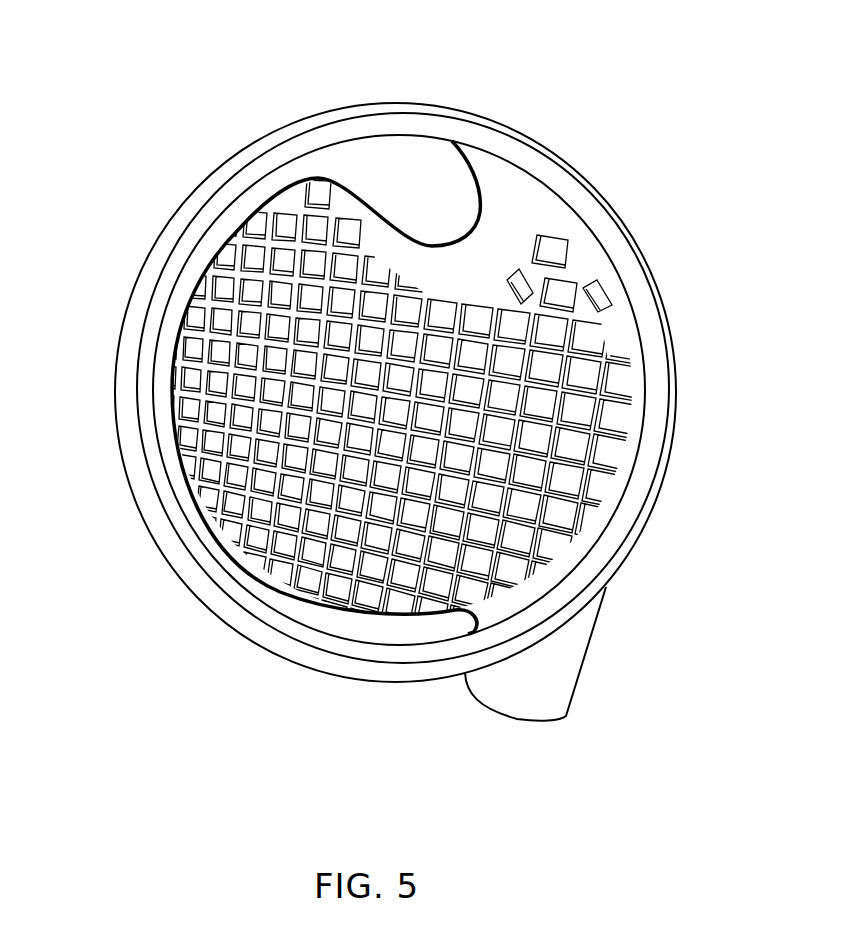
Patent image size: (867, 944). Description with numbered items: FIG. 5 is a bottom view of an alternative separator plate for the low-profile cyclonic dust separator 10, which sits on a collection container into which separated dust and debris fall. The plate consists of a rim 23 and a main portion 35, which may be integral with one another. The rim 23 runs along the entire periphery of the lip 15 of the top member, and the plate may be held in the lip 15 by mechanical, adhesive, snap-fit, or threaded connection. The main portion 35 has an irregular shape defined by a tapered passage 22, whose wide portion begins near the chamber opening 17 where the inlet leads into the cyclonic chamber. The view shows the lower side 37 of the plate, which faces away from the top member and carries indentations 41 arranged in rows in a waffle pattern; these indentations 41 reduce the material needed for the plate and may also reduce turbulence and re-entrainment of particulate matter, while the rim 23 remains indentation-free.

The dust separator 10 is at (148, 78).
The lip 15 is at (380, 676).
The chamber opening 17 is at (512, 722).
The tapered passage 22 is at (333, 163).
The rim 23 is at (275, 612).
The main portion 35 is at (512, 213).
The lower side 37 is at (228, 522).
The indentations 41 is at (565, 521).